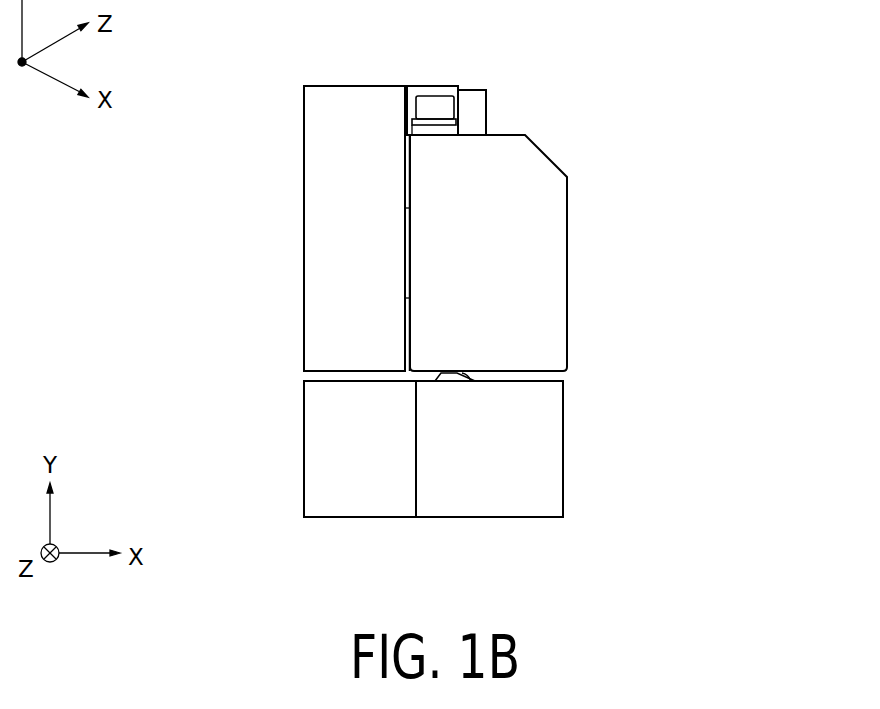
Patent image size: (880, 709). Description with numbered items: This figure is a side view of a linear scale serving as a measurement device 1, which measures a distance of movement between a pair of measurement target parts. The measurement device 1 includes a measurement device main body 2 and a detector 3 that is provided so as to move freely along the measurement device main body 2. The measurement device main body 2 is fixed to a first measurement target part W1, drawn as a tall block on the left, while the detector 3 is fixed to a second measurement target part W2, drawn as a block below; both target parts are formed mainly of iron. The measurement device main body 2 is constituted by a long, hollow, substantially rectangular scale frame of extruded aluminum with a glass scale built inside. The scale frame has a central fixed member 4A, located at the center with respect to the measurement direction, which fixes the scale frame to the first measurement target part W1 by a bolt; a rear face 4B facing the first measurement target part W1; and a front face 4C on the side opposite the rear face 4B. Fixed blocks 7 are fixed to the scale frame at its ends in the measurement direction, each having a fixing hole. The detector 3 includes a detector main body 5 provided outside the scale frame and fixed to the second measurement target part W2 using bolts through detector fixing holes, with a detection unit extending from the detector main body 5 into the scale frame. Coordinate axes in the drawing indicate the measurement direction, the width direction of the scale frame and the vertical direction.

The measurement device 1 is at (511, 312).
The measurement device main body 2 is at (503, 202).
The detector 3 is at (494, 479).
The central fixed member 4A is at (432, 85).
The rear face 4B is at (407, 175).
The front face 4C is at (567, 193).
The detector main body 5 is at (533, 512).
The fixed block 7 is at (517, 133).
The first measurement target part W1 is at (325, 100).
The second measurement target part W2 is at (336, 509).